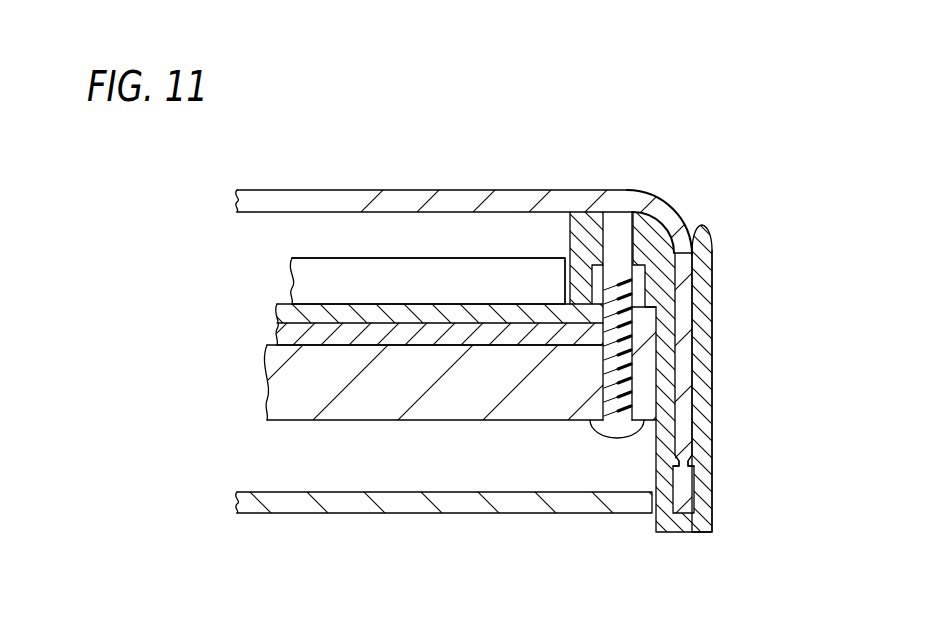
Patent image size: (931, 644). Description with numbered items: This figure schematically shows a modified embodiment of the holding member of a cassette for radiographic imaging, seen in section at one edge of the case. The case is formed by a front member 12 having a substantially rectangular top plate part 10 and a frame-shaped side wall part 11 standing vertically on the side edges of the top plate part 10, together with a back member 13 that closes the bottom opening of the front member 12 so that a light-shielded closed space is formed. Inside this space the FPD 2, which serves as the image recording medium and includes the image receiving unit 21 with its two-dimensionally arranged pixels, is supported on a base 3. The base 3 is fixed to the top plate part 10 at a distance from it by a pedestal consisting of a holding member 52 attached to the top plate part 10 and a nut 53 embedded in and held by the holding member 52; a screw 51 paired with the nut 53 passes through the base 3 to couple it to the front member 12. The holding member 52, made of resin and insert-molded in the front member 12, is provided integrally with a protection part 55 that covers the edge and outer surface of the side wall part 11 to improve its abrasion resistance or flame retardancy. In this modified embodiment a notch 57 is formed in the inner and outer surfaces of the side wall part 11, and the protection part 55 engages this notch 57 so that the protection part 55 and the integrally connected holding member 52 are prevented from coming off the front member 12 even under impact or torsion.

The top plate part 10 is at (395, 198).
The front member 12 is at (674, 198).
The side wall part 11 is at (683, 405).
The holding member 52 is at (713, 252).
The protection part 55 is at (703, 317).
The notch 57 is at (703, 464).
The nut 53 is at (597, 280).
The screw 51 is at (617, 432).
The FPD 2 is at (428, 248).
The image receiving unit 21 is at (505, 283).
The base 3 is at (462, 428).
The back member 13 is at (522, 522).